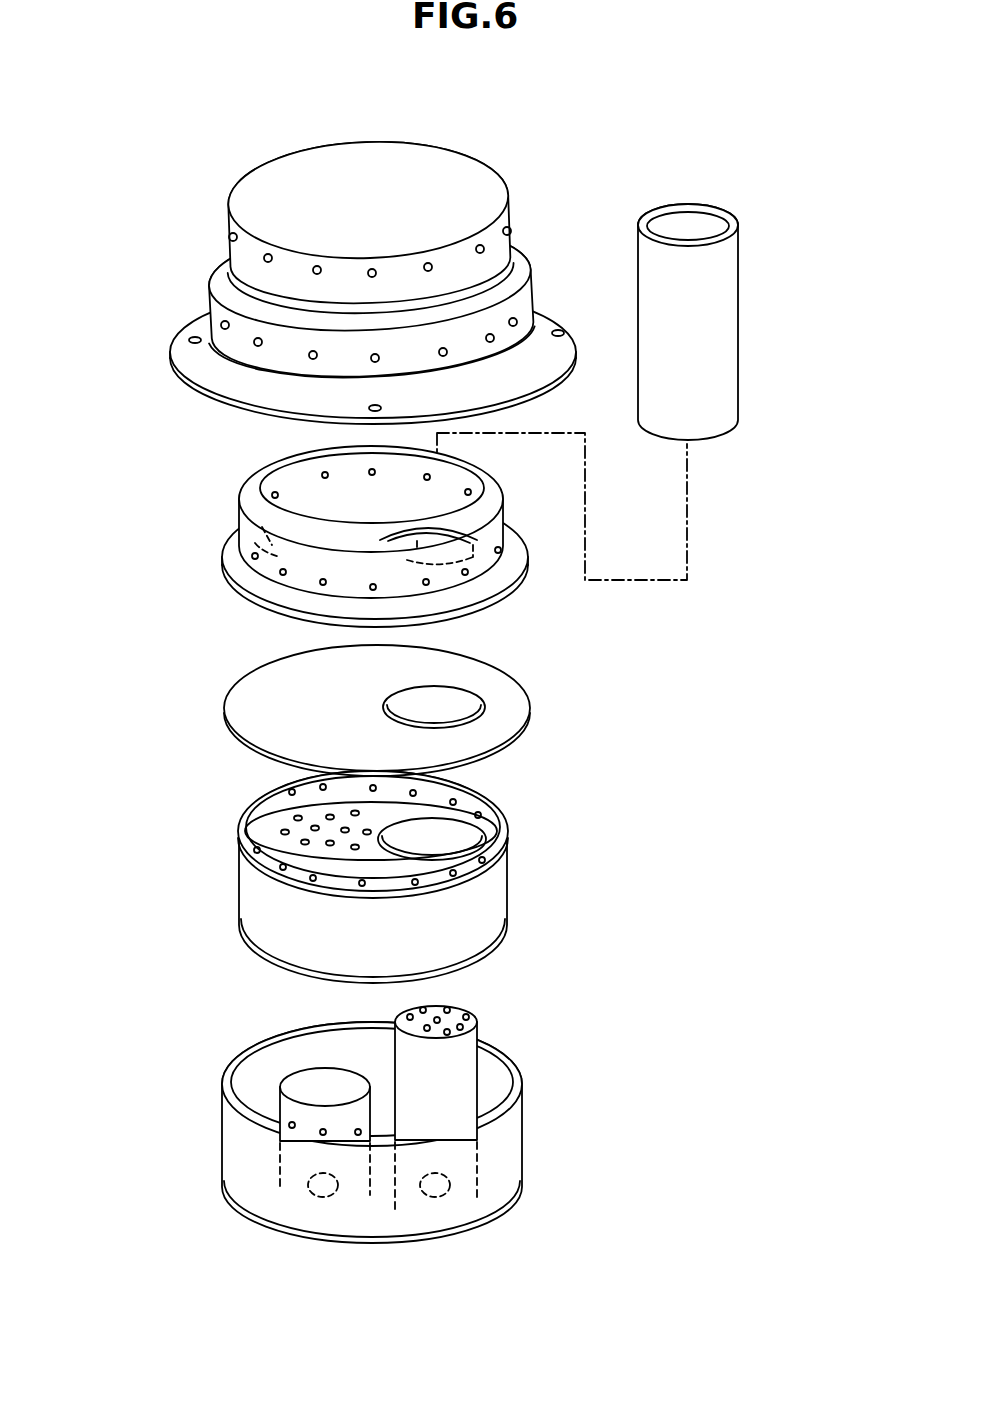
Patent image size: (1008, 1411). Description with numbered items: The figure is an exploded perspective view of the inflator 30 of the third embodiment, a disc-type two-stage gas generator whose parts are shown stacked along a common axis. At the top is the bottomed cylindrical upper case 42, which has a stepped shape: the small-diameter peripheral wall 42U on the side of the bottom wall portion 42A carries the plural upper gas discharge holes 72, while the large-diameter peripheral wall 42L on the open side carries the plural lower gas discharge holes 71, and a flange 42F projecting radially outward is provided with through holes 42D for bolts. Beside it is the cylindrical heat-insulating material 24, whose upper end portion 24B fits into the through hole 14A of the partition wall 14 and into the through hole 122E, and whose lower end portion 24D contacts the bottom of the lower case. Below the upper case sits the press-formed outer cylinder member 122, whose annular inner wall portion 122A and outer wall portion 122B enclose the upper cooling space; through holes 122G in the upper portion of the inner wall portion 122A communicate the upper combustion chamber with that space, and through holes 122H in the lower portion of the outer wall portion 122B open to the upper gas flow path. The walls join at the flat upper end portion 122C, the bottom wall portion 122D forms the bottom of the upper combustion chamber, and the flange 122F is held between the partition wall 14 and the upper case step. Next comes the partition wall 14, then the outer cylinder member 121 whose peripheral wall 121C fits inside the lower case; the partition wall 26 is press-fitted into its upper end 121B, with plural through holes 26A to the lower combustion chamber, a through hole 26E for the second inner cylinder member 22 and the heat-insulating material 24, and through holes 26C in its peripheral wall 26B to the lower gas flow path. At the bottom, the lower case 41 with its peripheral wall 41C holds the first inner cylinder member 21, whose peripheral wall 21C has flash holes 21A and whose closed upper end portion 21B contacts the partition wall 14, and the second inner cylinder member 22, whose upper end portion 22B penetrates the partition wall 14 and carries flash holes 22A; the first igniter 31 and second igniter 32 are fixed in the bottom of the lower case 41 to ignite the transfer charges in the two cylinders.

The inflator 30 is at (559, 151).
The upper case 42 is at (370, 278).
The bottom wall portion 42A is at (316, 163).
The peripheral wall 42U is at (491, 261).
The peripheral wall 42L is at (475, 354).
The flange 42F is at (192, 380).
The through holes 42D is at (194, 337).
The lower gas discharge holes 71 is at (313, 359).
The upper gas discharge holes 72 is at (480, 244).
The heat-insulating material 24 is at (729, 328).
The upper end portion 24B is at (680, 221).
The lower end portion 24D is at (718, 442).
The outer cylinder member 122 is at (354, 552).
The inner wall portion 122A is at (457, 485).
The outer wall portion 122B is at (248, 540).
The upper end portion 122C is at (497, 502).
The bottom wall portion 122D is at (234, 502).
The through hole 122E is at (413, 535).
The flange 122F is at (238, 567).
The through holes 122G is at (372, 496).
The through holes 122H is at (373, 589).
The partition wall 14 is at (376, 710).
The through hole 14A is at (482, 707).
The outer cylinder member 121 is at (383, 836).
The upper end 121B is at (508, 857).
The peripheral wall 121C is at (237, 907).
The partition wall 26 is at (374, 825).
The through holes 26A is at (324, 824).
The peripheral wall 26B is at (507, 840).
The through holes 26C is at (323, 784).
The through hole 26E is at (440, 843).
The lower case 41 is at (387, 1107).
The peripheral wall 41C is at (523, 1113).
The first inner cylinder member 21 is at (253, 1109).
The flash holes 21A is at (320, 1135).
The upper end portion 21B is at (307, 1087).
The peripheral wall 21C is at (373, 1113).
The second inner cylinder member 22 is at (429, 1086).
The flash holes 22A is at (436, 1008).
The upper end portion 22B is at (397, 1013).
The first igniter 31 is at (308, 1193).
The second igniter 32 is at (432, 1200).